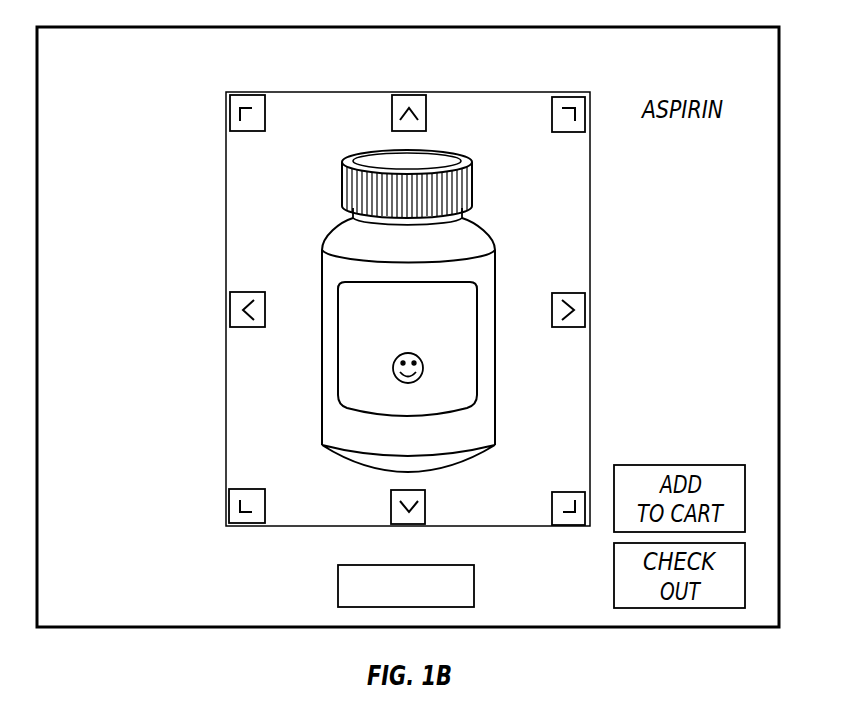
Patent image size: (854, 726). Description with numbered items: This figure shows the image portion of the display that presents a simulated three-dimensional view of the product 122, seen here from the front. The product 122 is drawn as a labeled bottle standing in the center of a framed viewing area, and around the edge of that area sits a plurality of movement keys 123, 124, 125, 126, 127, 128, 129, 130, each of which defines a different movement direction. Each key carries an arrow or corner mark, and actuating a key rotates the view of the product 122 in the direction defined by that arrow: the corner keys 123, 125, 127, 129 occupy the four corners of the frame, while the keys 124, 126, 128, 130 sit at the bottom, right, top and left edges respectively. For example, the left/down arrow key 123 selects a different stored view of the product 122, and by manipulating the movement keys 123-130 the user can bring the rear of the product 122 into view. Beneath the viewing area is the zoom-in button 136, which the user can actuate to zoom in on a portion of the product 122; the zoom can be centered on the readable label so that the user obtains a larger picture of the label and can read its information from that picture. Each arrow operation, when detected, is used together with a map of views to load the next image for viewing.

The product 122 is at (320, 392).
The movement key 123 is at (238, 526).
The movement key 124 is at (405, 526).
The movement key 125 is at (565, 526).
The movement key 126 is at (586, 308).
The movement key 127 is at (566, 96).
The movement key 128 is at (414, 94).
The movement key 129 is at (257, 94).
The movement key 130 is at (230, 310).
The zoom-in button 136 is at (340, 575).